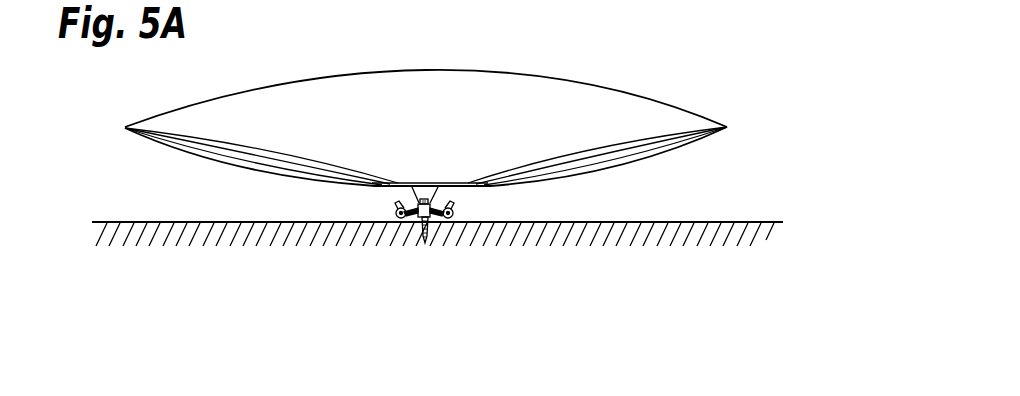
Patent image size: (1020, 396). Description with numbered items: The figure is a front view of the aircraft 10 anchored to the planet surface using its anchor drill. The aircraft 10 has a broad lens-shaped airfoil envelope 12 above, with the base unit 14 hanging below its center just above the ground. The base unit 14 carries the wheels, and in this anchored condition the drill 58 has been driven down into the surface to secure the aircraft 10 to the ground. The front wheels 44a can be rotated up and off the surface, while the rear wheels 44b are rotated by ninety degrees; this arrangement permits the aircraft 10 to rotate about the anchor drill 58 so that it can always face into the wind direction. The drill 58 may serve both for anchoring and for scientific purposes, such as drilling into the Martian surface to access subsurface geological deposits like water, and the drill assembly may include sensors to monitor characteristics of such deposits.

The aircraft 10 is at (426, 95).
The envelope 12 is at (508, 75).
The base unit 14 is at (450, 237).
The front wheels 44a is at (449, 206).
The rear wheels 44b is at (452, 216).
The anchor drill 58 is at (418, 226).